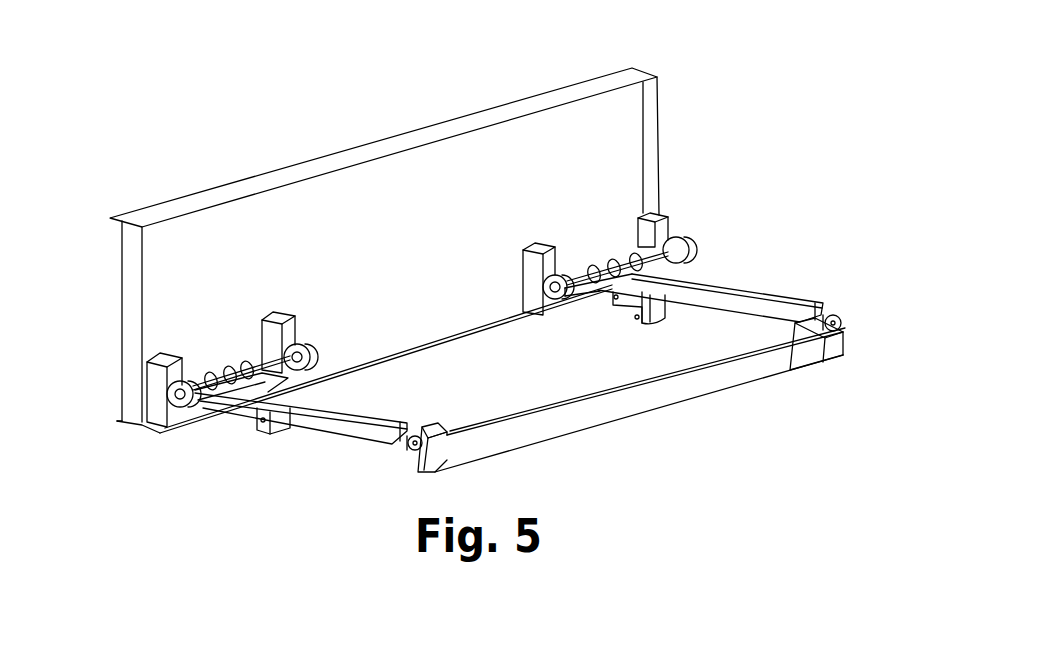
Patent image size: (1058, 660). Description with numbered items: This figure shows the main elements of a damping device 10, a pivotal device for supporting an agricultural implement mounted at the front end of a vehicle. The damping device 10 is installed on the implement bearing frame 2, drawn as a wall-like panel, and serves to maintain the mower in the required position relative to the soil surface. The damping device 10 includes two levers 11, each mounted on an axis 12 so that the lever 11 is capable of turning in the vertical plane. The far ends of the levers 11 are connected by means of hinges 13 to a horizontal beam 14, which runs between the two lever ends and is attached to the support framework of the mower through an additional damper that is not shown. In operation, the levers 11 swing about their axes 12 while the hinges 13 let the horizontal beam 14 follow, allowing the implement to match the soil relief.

The implement bearing frame 2 is at (173, 247).
The damping device 10 is at (275, 500).
The lever 11 is at (275, 400).
The axis 12 is at (258, 365).
The hinge 13 is at (410, 450).
The horizontal beam 14 is at (563, 413).